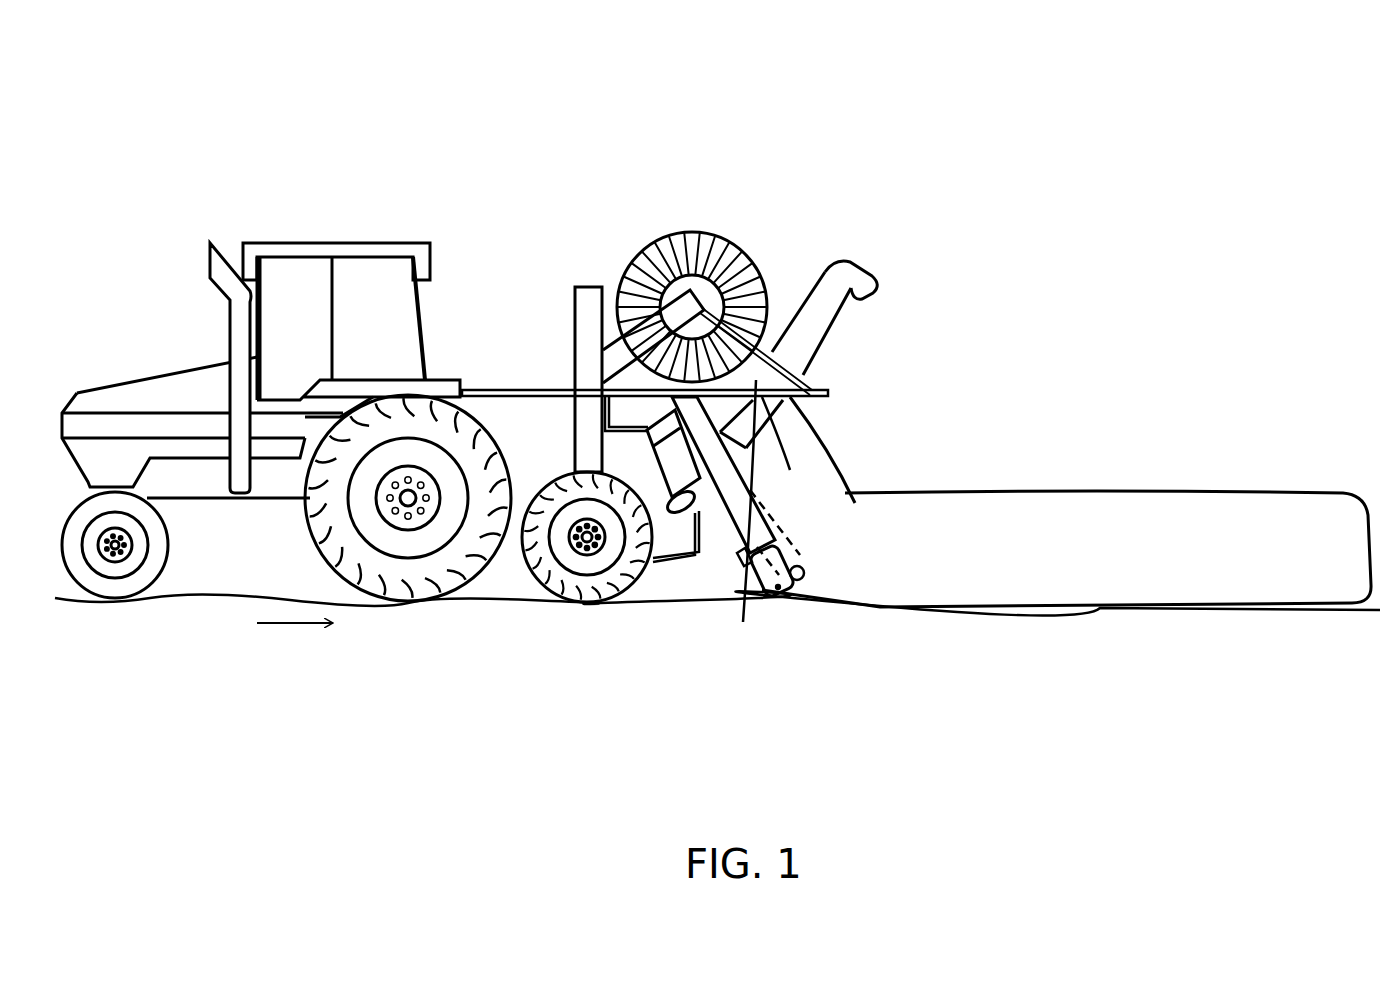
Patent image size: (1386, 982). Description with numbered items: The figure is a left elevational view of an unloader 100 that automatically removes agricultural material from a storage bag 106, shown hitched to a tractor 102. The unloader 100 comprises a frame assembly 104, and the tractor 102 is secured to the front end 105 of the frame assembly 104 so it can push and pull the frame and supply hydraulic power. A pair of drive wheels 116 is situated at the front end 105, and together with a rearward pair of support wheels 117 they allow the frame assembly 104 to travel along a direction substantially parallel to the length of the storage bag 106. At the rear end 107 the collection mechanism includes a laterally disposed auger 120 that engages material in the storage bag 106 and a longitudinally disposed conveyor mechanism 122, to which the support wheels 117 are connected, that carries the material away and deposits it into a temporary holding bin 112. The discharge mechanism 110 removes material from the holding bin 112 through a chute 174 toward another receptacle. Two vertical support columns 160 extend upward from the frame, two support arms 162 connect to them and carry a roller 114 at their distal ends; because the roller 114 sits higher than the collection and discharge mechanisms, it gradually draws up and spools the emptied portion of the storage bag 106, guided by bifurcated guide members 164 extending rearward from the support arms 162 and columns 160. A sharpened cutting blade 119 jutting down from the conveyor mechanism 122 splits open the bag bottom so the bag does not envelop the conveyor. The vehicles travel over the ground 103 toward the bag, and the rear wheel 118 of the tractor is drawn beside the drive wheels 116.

The unloader 100 is at (612, 100).
The tractor 102 is at (313, 243).
The ground surface 103 is at (533, 640).
The frame assembly 104 is at (734, 281).
The front end 105 is at (553, 418).
The storage bag 106 is at (1140, 500).
The rear end 107 is at (908, 437).
The discharge mechanism 110 is at (853, 339).
The holding bin 112 is at (667, 537).
The roller 114 is at (670, 240).
The drive wheels 116 is at (607, 592).
The support wheels 117 is at (782, 600).
The rear wheel 118 is at (430, 600).
The cutting blade 119 is at (745, 624).
The auger 120 is at (806, 565).
The conveyor mechanism 122 is at (788, 521).
The vertical support columns 160 is at (586, 287).
The support arms 162 is at (600, 358).
The guide members 164 is at (822, 388).
The chute 174 is at (858, 288).